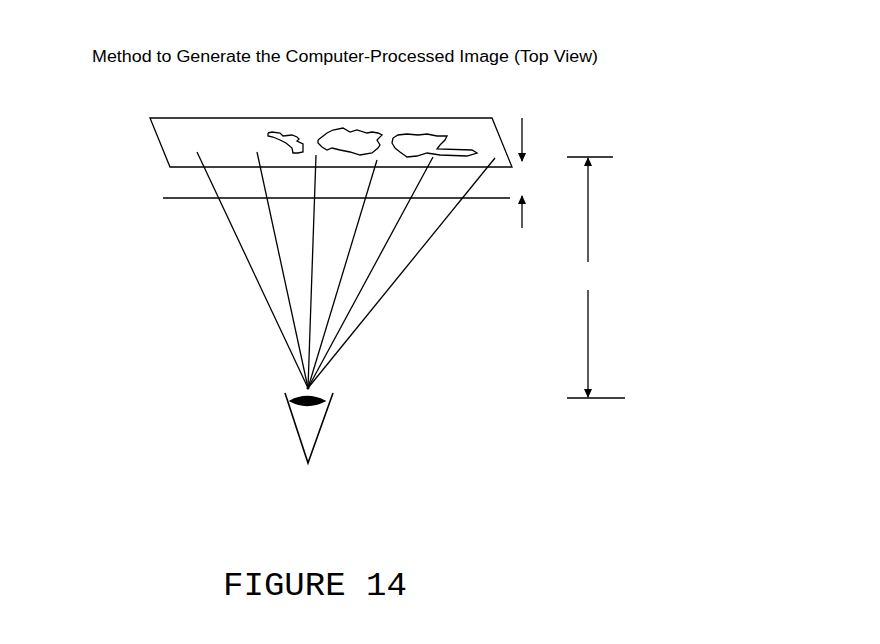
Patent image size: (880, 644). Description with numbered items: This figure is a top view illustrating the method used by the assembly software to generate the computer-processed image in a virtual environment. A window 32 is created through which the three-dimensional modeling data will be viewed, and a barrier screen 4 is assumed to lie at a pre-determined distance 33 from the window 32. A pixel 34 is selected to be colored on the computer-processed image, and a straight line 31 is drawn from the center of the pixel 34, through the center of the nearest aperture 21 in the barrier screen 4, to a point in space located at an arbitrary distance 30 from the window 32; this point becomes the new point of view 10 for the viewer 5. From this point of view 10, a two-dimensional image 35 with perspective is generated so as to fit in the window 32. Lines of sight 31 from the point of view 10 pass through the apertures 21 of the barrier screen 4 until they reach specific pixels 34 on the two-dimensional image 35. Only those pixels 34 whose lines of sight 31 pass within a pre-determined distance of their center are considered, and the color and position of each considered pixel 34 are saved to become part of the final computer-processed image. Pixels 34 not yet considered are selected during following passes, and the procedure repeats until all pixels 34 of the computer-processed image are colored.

The window 32 is at (158, 143).
The barrier screen 4 is at (155, 198).
The aperture 21 is at (212, 203).
The pixel 34 is at (257, 151).
The 2-D image 35 is at (417, 141).
The line of sight 31 is at (383, 272).
The pre-determined distance 33 is at (522, 173).
The arbitrary distance 30 is at (596, 277).
The point of view 10 is at (301, 389).
The viewer 5 is at (283, 432).